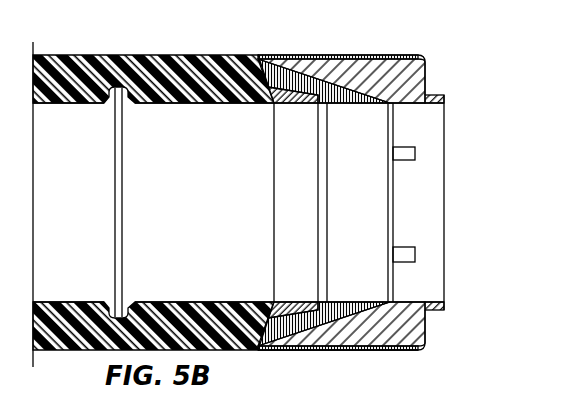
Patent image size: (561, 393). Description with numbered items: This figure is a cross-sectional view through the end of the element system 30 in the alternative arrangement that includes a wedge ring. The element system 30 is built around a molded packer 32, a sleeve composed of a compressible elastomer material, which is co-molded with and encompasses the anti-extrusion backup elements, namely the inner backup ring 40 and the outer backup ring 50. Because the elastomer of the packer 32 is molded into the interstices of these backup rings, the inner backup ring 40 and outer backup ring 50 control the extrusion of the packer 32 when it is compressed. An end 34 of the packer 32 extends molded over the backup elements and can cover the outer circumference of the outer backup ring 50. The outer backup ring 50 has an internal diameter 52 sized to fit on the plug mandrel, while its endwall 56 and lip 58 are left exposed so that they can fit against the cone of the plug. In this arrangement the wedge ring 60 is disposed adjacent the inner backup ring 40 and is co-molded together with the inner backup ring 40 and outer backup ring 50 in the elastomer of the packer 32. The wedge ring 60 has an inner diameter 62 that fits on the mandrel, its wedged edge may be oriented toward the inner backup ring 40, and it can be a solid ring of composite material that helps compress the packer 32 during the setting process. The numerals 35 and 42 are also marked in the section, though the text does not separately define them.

The element system 30 is at (524, 77).
The packer 32 is at (116, 55).
The end 34 is at (405, 352).
The retaining ring 35 is at (187, 118).
The inner backup ring 40 is at (300, 58).
The wedge portion 42 is at (347, 300).
The outer backup ring 50 is at (372, 62).
The internal diameter 52 is at (428, 302).
The endwall 56 is at (428, 74).
The lip 58 is at (444, 100).
The wedge ring 60 is at (253, 57).
The inner diameter 62 is at (293, 106).